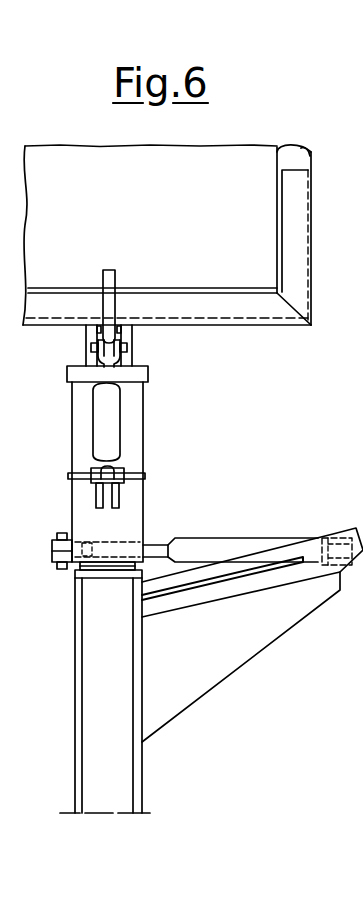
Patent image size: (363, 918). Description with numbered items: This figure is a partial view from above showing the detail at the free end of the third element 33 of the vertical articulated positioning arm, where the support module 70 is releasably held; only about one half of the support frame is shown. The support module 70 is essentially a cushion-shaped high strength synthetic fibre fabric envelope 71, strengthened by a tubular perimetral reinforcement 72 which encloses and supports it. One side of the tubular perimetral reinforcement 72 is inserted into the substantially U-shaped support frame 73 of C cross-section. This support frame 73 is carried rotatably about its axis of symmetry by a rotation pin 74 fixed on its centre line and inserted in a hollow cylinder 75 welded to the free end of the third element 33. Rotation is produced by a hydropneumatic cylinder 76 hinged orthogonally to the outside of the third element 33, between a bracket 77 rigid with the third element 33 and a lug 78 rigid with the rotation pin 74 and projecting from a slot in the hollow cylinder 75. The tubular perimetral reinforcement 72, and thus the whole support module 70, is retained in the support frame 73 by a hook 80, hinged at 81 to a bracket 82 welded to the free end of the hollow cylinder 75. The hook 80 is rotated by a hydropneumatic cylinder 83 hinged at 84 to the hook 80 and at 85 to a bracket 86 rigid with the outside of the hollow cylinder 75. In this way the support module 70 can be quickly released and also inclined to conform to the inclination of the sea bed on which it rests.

The support module 70 is at (216, 145).
The high strength synthetic fibre fabric envelope 71 is at (253, 238).
The tubular perimetral reinforcement 72 is at (302, 160).
The U-shaped support frame 73 is at (302, 198).
The rotation pin 74 is at (133, 330).
The hollow cylinder 75 is at (133, 428).
The hydropneumatic cylinder 76 is at (238, 543).
The bracket 77 is at (255, 637).
The lug 78 is at (56, 549).
The hook 80 is at (110, 268).
The hinge of hook 81 is at (90, 350).
The bracket 82 is at (120, 357).
The hydropneumatic cylinder 83 is at (105, 432).
The hinge to hook 84 is at (92, 330).
The hinge to bracket 85 is at (86, 483).
The bracket 86 is at (97, 500).
The third element 33 is at (125, 778).